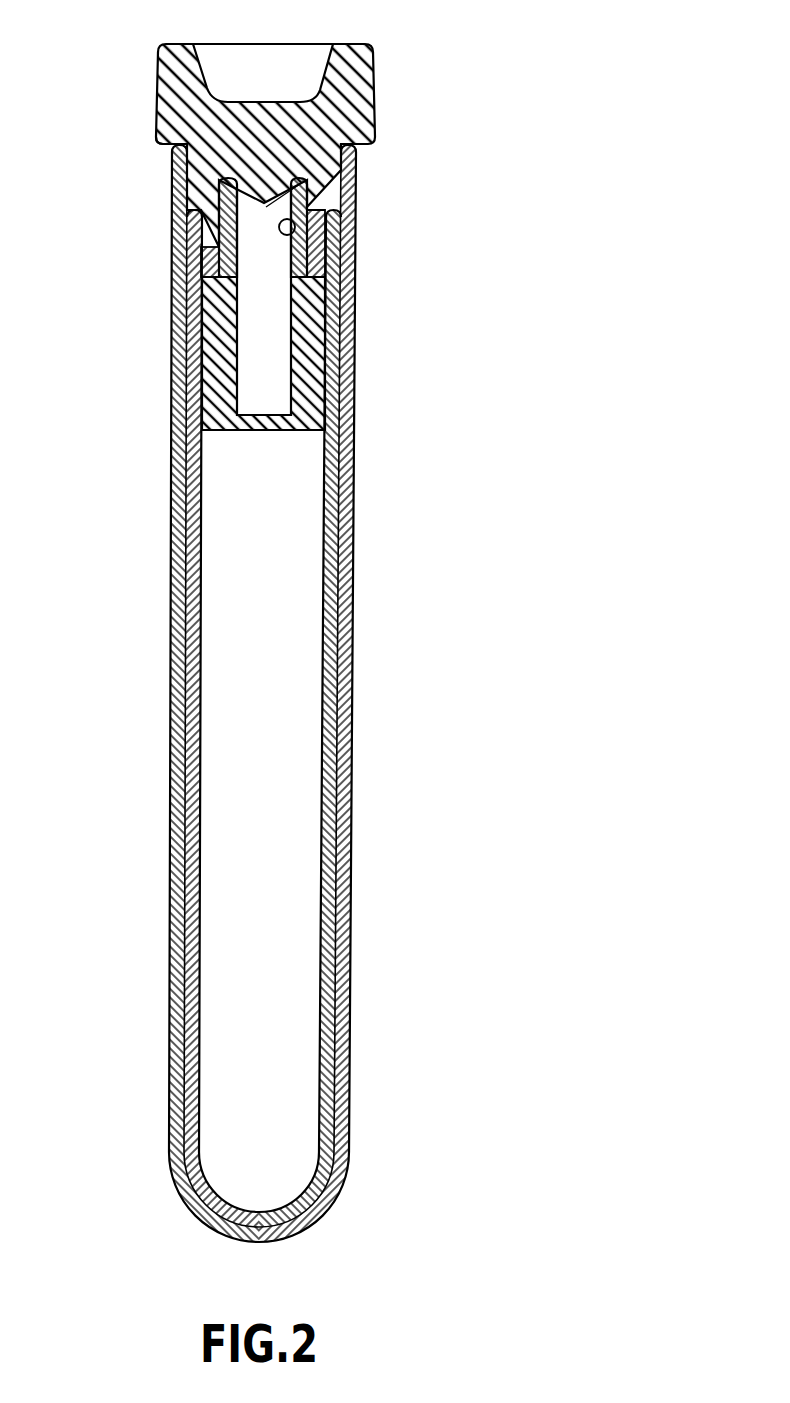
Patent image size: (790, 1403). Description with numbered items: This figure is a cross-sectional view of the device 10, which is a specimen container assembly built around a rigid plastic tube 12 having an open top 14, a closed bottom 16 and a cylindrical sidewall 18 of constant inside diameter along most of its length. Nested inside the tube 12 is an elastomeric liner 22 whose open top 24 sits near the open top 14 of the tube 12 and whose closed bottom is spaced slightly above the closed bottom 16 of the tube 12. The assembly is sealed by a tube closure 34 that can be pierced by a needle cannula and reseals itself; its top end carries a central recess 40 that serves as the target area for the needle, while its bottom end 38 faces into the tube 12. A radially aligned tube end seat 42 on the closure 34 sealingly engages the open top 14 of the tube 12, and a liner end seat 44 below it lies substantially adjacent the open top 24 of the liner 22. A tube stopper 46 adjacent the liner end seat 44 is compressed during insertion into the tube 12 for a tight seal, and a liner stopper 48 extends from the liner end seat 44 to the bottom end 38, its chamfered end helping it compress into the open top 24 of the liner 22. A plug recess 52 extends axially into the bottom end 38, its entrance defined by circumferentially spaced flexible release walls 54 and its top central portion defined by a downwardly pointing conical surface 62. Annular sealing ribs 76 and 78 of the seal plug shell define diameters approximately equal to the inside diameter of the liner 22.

The device 10 is at (120, 475).
The tube 12 is at (164, 666).
The open top 14 is at (157, 128).
The closed bottom 16 is at (213, 1225).
The cylindrical sidewall 18 is at (167, 713).
The elastomeric liner 22 is at (343, 702).
The open top 24 is at (357, 202).
The tube closure 34 is at (378, 40).
The bottom end 38 is at (186, 44).
The central recess 40 is at (266, 100).
The tube end seat 42 is at (158, 146).
The liner end seat 44 is at (172, 241).
The tube stopper 46 is at (172, 168).
The liner stopper 48 is at (208, 250).
The plug recess 52 is at (300, 233).
The flexible release walls 54 is at (208, 284).
The conical surface 62 is at (283, 190).
The annular sealing rib 76 is at (202, 420).
The annular sealing rib 78 is at (341, 297).